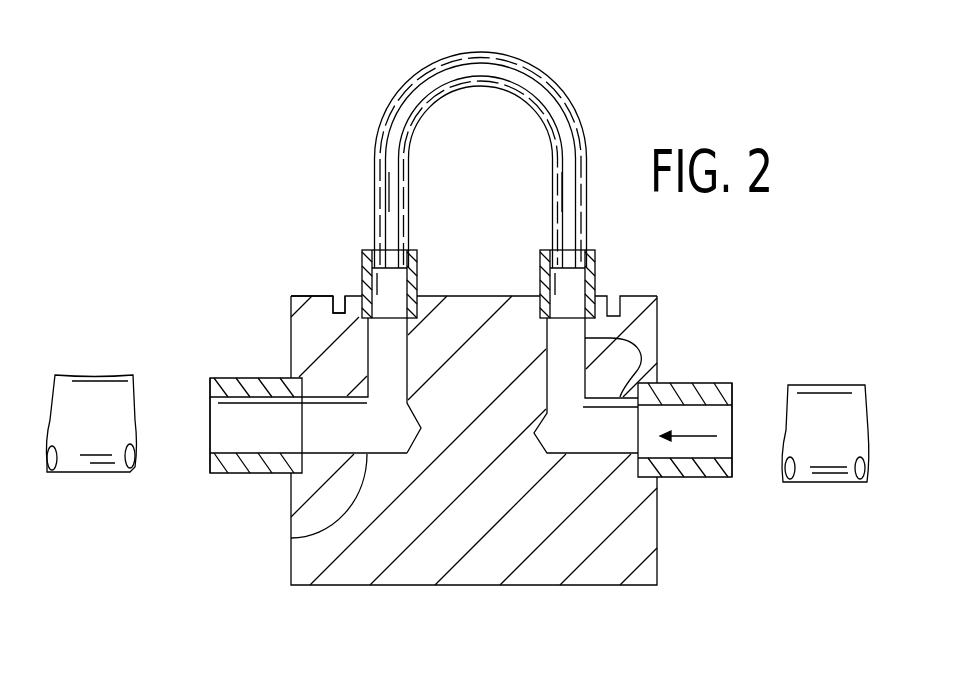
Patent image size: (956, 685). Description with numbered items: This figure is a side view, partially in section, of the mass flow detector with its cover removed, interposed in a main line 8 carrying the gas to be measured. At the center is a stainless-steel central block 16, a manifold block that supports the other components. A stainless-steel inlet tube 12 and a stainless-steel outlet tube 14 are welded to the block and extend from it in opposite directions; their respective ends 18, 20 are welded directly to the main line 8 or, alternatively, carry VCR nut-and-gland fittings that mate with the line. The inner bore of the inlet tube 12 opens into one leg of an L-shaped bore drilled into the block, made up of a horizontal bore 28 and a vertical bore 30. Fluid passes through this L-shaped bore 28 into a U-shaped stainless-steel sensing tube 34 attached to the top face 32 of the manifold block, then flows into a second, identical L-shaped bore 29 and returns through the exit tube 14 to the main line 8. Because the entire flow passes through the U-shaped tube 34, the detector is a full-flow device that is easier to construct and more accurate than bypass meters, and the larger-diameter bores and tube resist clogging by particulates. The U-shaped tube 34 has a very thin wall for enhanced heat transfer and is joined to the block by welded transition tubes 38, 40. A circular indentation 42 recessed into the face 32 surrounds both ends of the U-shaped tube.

The main line 8 is at (102, 473).
The inlet tube 12 is at (703, 480).
The outlet tube 14 is at (252, 477).
The central block 16 is at (341, 567).
The end of inlet tube 18 is at (732, 407).
The end of outlet tube 20 is at (208, 396).
The horizontal bore 28 is at (662, 342).
The second L-shaped bore 29 is at (290, 538).
The vertical bore 30 is at (628, 340).
The top face 32 is at (303, 293).
The U-shaped sensing tube 34 is at (537, 68).
The transition tube 38 is at (597, 268).
The transition tube 40 is at (360, 265).
The circular indentation 42 is at (340, 293).